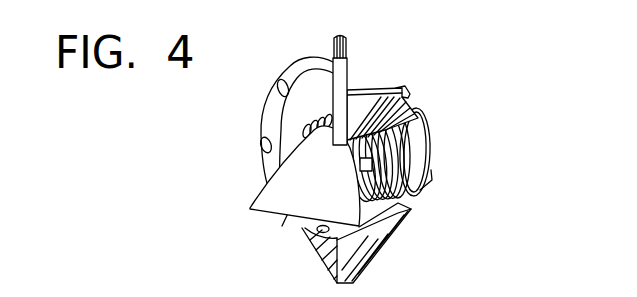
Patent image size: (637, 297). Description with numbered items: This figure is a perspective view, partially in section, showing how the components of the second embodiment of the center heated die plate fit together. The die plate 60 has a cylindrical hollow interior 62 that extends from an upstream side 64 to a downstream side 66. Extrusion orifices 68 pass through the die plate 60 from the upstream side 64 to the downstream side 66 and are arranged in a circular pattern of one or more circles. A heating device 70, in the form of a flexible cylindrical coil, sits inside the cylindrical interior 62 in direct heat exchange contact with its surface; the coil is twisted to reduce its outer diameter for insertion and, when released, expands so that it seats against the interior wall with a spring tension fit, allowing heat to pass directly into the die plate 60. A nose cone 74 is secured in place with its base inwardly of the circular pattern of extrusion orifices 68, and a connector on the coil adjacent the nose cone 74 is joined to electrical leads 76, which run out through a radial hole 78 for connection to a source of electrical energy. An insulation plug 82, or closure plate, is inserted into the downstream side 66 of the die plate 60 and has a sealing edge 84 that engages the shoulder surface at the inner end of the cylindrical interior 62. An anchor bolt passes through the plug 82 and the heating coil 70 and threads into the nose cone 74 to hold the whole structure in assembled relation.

The die plate 60 is at (370, 87).
The cylindrical hollow interior 62 is at (406, 96).
The upstream side 64 is at (269, 268).
The downstream side 66 is at (404, 97).
The extrusion orifices 68 is at (373, 226).
The heating device 70 is at (424, 166).
The nose cone 74 is at (283, 223).
The electrical leads 76 is at (349, 70).
The radial hole 78 is at (278, 112).
The insulation plug 82 is at (432, 183).
The sealing edge 84 is at (426, 130).